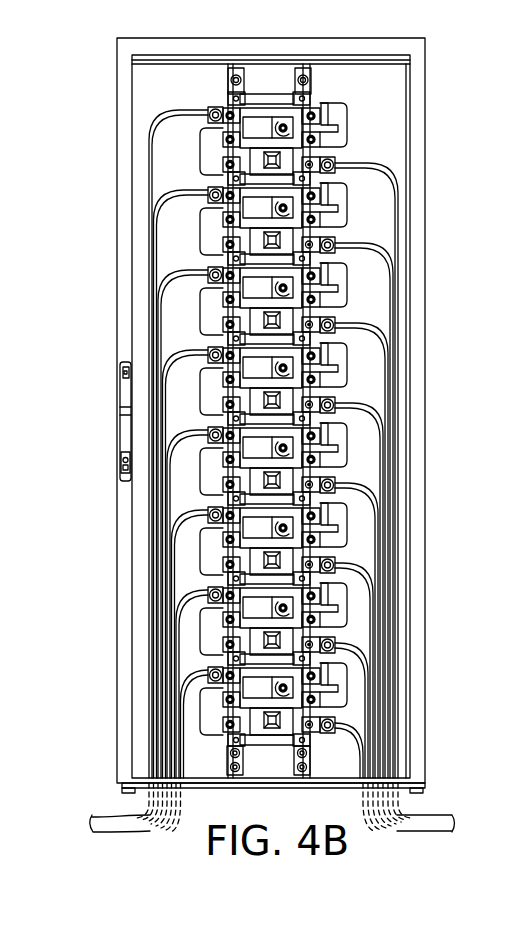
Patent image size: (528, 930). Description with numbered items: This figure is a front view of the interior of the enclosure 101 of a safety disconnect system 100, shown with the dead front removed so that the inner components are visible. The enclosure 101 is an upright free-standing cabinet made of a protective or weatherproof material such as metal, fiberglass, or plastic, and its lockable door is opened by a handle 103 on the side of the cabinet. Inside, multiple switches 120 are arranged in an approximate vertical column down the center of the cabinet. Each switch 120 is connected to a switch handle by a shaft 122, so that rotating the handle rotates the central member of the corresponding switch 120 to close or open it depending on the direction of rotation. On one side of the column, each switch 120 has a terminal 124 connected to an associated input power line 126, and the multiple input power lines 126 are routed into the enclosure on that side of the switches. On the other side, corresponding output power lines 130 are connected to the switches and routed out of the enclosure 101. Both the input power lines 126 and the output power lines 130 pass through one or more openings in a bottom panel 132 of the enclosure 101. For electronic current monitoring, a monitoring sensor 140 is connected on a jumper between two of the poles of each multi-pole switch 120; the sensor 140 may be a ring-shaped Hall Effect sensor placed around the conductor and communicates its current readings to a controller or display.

The safety disconnect system 100 is at (448, 76).
The enclosure 101 is at (117, 182).
The handle 103 is at (120, 398).
The switch 120 is at (262, 118).
The shaft 122 is at (282, 124).
The terminal 124 is at (210, 109).
The input power line 126 is at (155, 135).
The output power line 130 is at (382, 172).
The bottom panel 132 is at (205, 783).
The monitoring sensor 140 is at (330, 101).